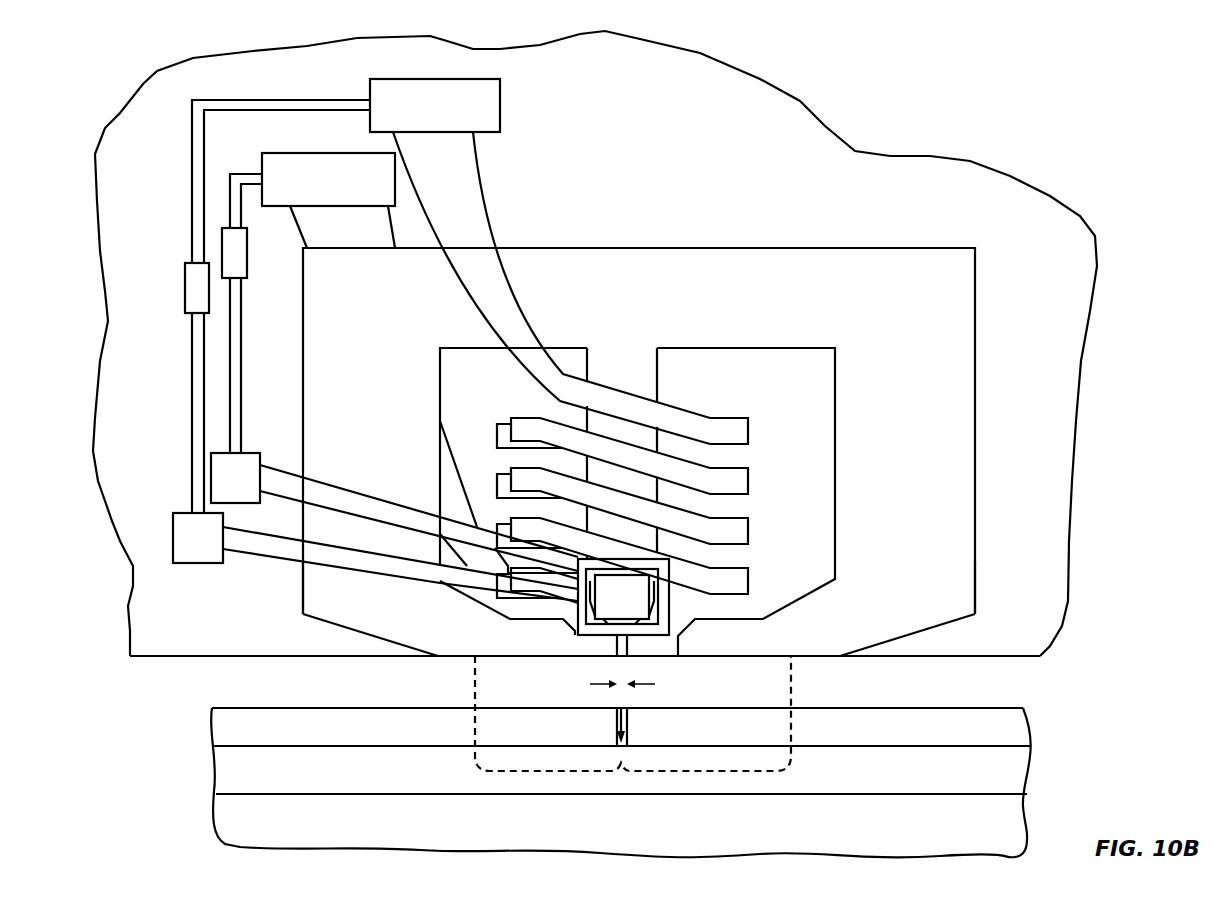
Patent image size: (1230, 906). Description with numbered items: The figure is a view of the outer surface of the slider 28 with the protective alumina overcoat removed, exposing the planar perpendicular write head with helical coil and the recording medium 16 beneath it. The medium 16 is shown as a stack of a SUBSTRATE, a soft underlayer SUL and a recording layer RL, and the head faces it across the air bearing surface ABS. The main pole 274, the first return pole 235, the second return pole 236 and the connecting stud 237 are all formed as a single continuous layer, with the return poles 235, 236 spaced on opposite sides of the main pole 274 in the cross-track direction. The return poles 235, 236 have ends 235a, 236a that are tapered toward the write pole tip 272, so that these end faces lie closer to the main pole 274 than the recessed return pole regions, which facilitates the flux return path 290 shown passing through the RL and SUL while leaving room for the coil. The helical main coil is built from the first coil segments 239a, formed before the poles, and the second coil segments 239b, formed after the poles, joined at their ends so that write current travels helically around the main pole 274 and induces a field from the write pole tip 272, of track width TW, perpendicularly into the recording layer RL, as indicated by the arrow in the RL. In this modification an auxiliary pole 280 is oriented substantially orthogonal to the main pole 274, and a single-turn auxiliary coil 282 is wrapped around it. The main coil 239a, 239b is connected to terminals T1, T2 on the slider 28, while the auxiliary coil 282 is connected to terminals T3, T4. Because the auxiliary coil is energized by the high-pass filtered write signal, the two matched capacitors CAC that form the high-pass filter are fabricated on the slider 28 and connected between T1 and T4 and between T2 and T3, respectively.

The slider 28 is at (1083, 355).
The air bearing surface ABS is at (922, 657).
The first terminal T1 is at (401, 85).
The second terminal T2 is at (326, 157).
The third terminal T3 is at (215, 470).
The fourth terminal T4 is at (182, 530).
The matched capacitors CAC is at (232, 245).
The connecting stud 237 is at (690, 257).
The first return pole 235 is at (318, 390).
The second return pole 236 is at (962, 405).
The first return pole end 235a is at (462, 657).
The second return pole end 236a is at (815, 657).
The main pole 274 is at (655, 383).
The first coil segments 239a is at (510, 423).
The second coil segments 239b is at (713, 427).
The auxiliary pole 280 is at (632, 603).
The auxiliary coil 282 is at (592, 630).
The write pole tip 272 is at (627, 642).
The track width TW is at (640, 686).
The flux return path 290 is at (475, 760).
The recording layer RL is at (621, 727).
The soft underlayer SUL is at (621, 779).
The substrate SUBSTRATE is at (621, 782).
The recording medium 16 is at (590, 792).